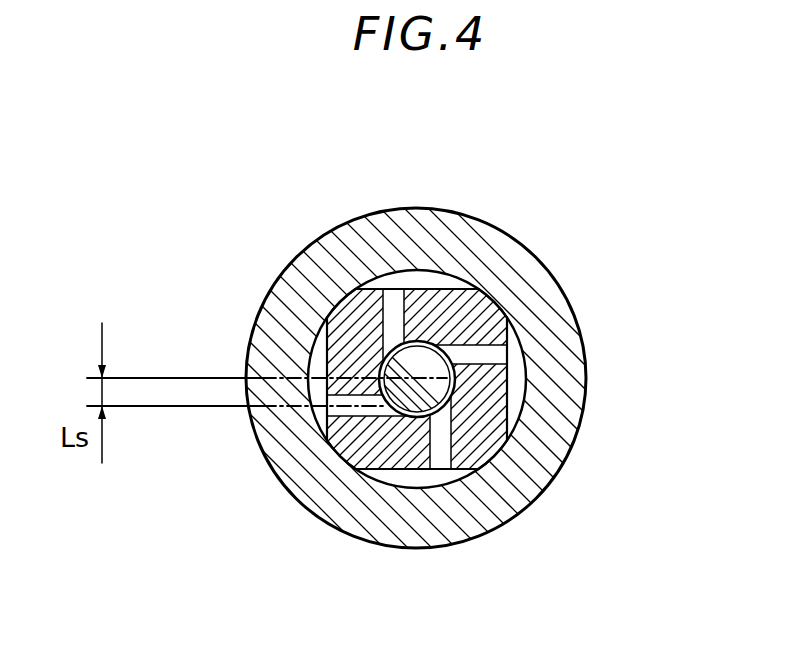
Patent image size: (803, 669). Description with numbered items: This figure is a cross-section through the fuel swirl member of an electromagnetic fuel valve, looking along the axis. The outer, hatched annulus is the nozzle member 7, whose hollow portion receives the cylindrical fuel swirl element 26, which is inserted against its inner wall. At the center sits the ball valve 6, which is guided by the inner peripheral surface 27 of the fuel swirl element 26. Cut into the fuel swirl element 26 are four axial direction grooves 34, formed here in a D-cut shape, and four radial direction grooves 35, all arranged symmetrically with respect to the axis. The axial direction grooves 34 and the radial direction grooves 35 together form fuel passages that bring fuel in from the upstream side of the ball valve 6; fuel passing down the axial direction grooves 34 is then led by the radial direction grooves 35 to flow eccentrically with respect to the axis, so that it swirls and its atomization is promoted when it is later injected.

The ball valve 6 is at (481, 298).
The nozzle member 7 is at (553, 298).
The fuel swirl element 26 is at (500, 443).
The inner peripheral surface 27 is at (325, 455).
The axial direction groove 34 is at (442, 292).
The radial direction groove 35 is at (393, 303).